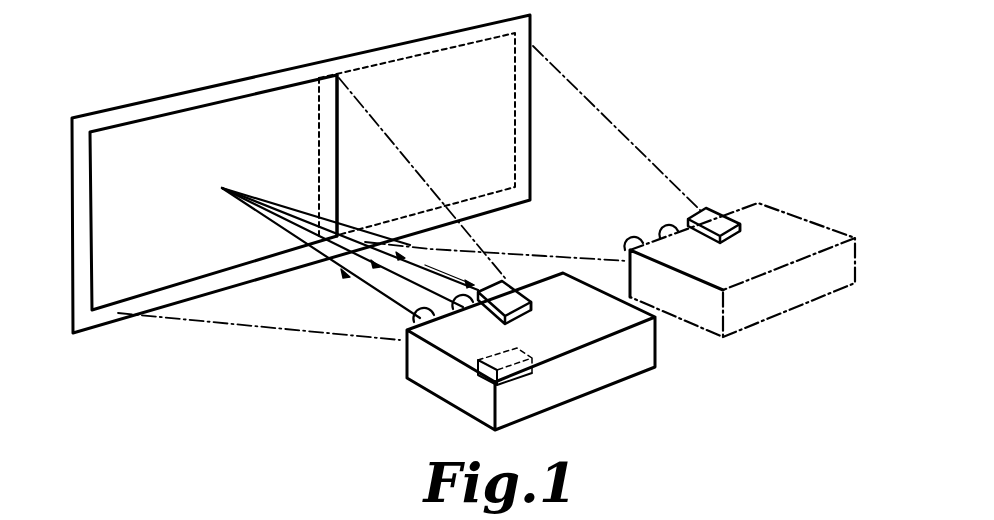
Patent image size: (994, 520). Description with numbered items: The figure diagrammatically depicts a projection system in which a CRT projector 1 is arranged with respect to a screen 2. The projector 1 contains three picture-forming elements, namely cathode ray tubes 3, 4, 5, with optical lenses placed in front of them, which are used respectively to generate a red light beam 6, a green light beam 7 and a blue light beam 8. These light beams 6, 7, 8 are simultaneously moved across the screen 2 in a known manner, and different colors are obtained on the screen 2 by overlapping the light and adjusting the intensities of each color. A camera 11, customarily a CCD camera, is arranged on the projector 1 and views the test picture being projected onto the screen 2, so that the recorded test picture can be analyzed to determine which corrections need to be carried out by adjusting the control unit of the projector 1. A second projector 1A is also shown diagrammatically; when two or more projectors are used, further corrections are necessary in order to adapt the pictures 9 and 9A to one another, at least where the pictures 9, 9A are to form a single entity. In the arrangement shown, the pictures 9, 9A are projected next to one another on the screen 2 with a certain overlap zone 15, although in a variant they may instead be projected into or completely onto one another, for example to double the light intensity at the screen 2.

The CRT projector 1 is at (588, 386).
The second projector 1A is at (797, 300).
The screen 2 is at (384, 52).
The cathode ray tube 3 is at (410, 320).
The cathode ray tube 4 is at (467, 315).
The cathode ray tube 5 is at (508, 282).
The red light beam 6 is at (327, 255).
The green light beam 7 is at (378, 272).
The blue light beam 8 is at (400, 268).
The picture 9 is at (194, 115).
The picture 9A is at (508, 74).
The camera 11 is at (532, 303).
The overlap zone 15 is at (330, 113).